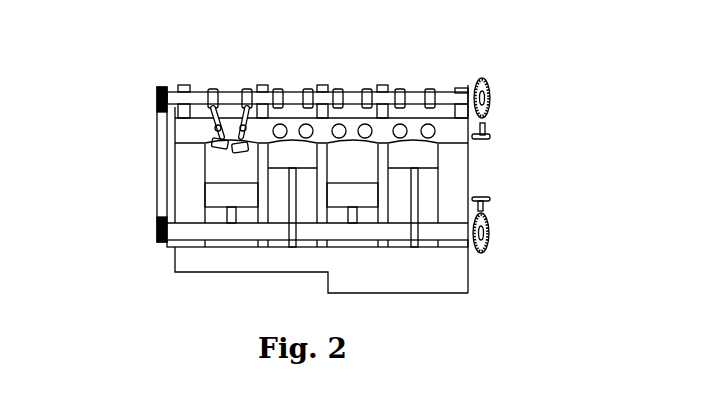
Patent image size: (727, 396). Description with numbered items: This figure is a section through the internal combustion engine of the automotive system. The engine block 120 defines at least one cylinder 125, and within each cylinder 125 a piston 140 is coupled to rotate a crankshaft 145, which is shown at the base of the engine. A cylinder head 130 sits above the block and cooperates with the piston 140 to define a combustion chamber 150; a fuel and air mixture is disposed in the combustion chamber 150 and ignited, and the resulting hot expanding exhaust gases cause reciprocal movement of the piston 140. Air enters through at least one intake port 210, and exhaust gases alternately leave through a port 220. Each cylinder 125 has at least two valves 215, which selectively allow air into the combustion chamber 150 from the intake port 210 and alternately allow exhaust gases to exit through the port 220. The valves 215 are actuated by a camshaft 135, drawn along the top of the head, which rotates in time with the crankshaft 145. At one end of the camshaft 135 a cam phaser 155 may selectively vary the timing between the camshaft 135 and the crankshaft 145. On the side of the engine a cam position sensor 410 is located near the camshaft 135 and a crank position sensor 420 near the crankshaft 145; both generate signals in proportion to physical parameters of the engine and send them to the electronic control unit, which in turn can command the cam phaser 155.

The engine block 120 is at (175, 186).
The cylinder 125 is at (330, 170).
The cylinder head 130 is at (178, 140).
The camshaft 135 is at (228, 90).
The piston 140 is at (358, 192).
The crankshaft 145 is at (200, 237).
The combustion chamber 150 is at (413, 143).
The cam phaser 155 is at (153, 92).
The intake port 210 is at (343, 127).
The valves 215 is at (212, 140).
The exhaust port 220 is at (288, 90).
The cam position sensor 410 is at (490, 132).
The crank position sensor 420 is at (490, 200).